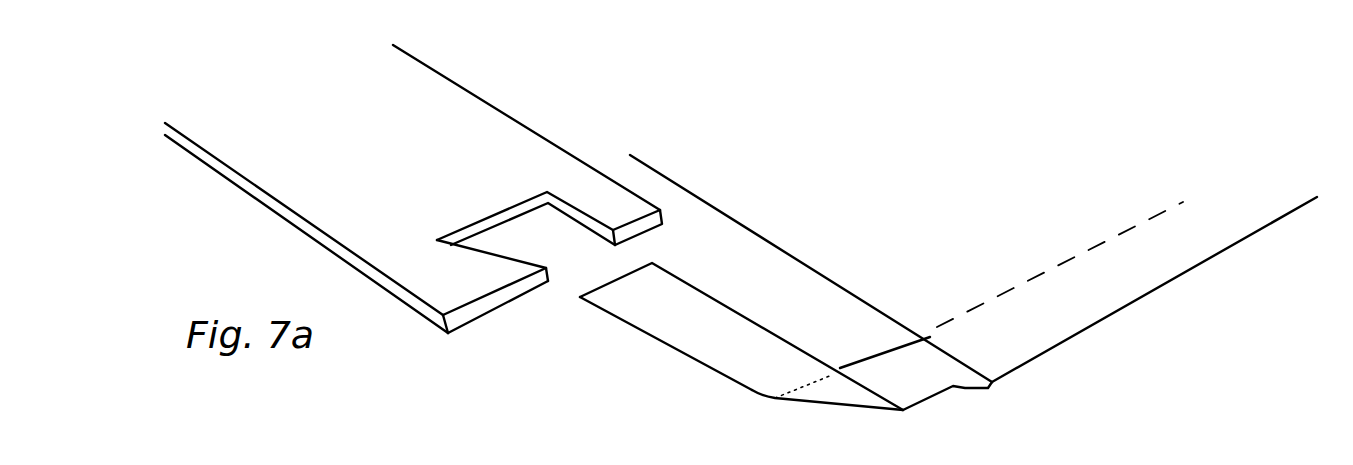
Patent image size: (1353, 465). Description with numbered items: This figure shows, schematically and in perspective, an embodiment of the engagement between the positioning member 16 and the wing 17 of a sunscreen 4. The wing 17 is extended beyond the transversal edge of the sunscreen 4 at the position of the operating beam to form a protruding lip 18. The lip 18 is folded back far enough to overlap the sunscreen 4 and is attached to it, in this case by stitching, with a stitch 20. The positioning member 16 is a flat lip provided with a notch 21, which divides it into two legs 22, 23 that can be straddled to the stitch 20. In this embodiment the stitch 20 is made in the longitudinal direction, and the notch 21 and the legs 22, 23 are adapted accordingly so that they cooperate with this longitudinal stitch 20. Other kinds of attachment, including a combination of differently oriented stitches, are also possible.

The sunscreen 4 is at (996, 107).
The positioning member 16 is at (257, 142).
The wing 17 is at (1070, 305).
The protruding lip 18 is at (690, 335).
The stitch 20 is at (773, 407).
The notch 21 is at (510, 249).
The leg 22 is at (447, 287).
The leg 23 is at (604, 203).